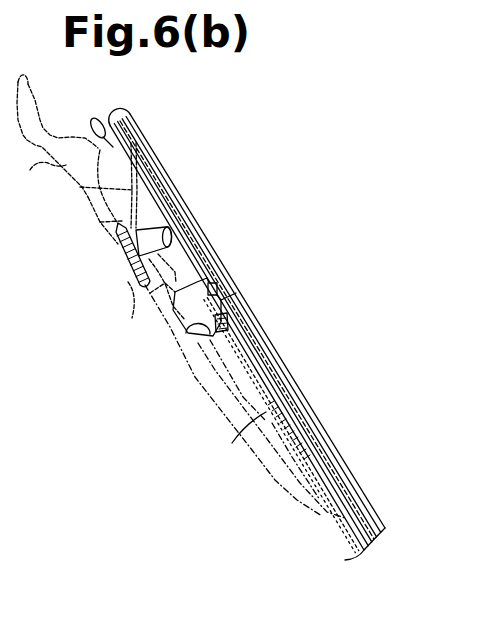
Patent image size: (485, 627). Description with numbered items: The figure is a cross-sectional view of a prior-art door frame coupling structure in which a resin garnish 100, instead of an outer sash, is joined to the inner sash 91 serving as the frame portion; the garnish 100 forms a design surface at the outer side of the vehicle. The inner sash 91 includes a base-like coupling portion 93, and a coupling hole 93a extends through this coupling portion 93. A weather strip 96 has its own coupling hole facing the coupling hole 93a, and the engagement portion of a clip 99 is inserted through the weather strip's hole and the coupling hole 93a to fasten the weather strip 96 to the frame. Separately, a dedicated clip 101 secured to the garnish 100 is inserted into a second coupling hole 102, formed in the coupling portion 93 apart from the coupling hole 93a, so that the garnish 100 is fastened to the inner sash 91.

The inner sash 91 is at (274, 414).
The coupling portion 93 is at (96, 191).
The coupling hole 93a is at (118, 248).
The weather strip 96 is at (32, 168).
The clip 99 is at (130, 282).
The resin garnish 100 is at (160, 154).
The dedicated clip 101 is at (238, 294).
The coupling hole 102 is at (185, 337).